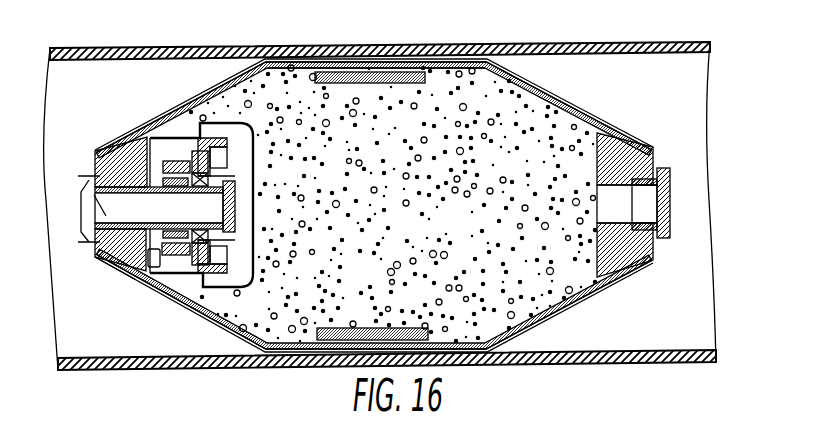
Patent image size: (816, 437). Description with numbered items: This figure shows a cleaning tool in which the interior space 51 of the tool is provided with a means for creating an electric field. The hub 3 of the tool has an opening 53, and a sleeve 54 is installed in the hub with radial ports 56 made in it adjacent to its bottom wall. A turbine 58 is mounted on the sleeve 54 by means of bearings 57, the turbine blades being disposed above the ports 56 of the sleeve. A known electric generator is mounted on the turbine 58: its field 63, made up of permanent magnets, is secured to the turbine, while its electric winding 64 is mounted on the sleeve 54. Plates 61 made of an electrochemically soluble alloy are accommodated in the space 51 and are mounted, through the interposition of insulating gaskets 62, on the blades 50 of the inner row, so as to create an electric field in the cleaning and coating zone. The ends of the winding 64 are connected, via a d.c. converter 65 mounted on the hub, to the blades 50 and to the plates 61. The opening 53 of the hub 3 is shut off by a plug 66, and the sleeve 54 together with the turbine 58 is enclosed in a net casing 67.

The hub 3 is at (635, 162).
The blades of the inner row 50 is at (533, 84).
The space 51 is at (545, 280).
The opening 53 is at (615, 212).
The sleeve 54 is at (89, 180).
The radial ports 56 is at (207, 278).
The bearings 57 is at (178, 245).
The turbine 58 is at (197, 133).
The plates 61 is at (369, 70).
The insulating gaskets 62 is at (407, 68).
The field of the electric generator 63 is at (117, 157).
The electric winding 64 is at (150, 260).
The d.c. converter 65 is at (100, 264).
The plug 66 is at (661, 237).
The net casing 67 is at (271, 76).